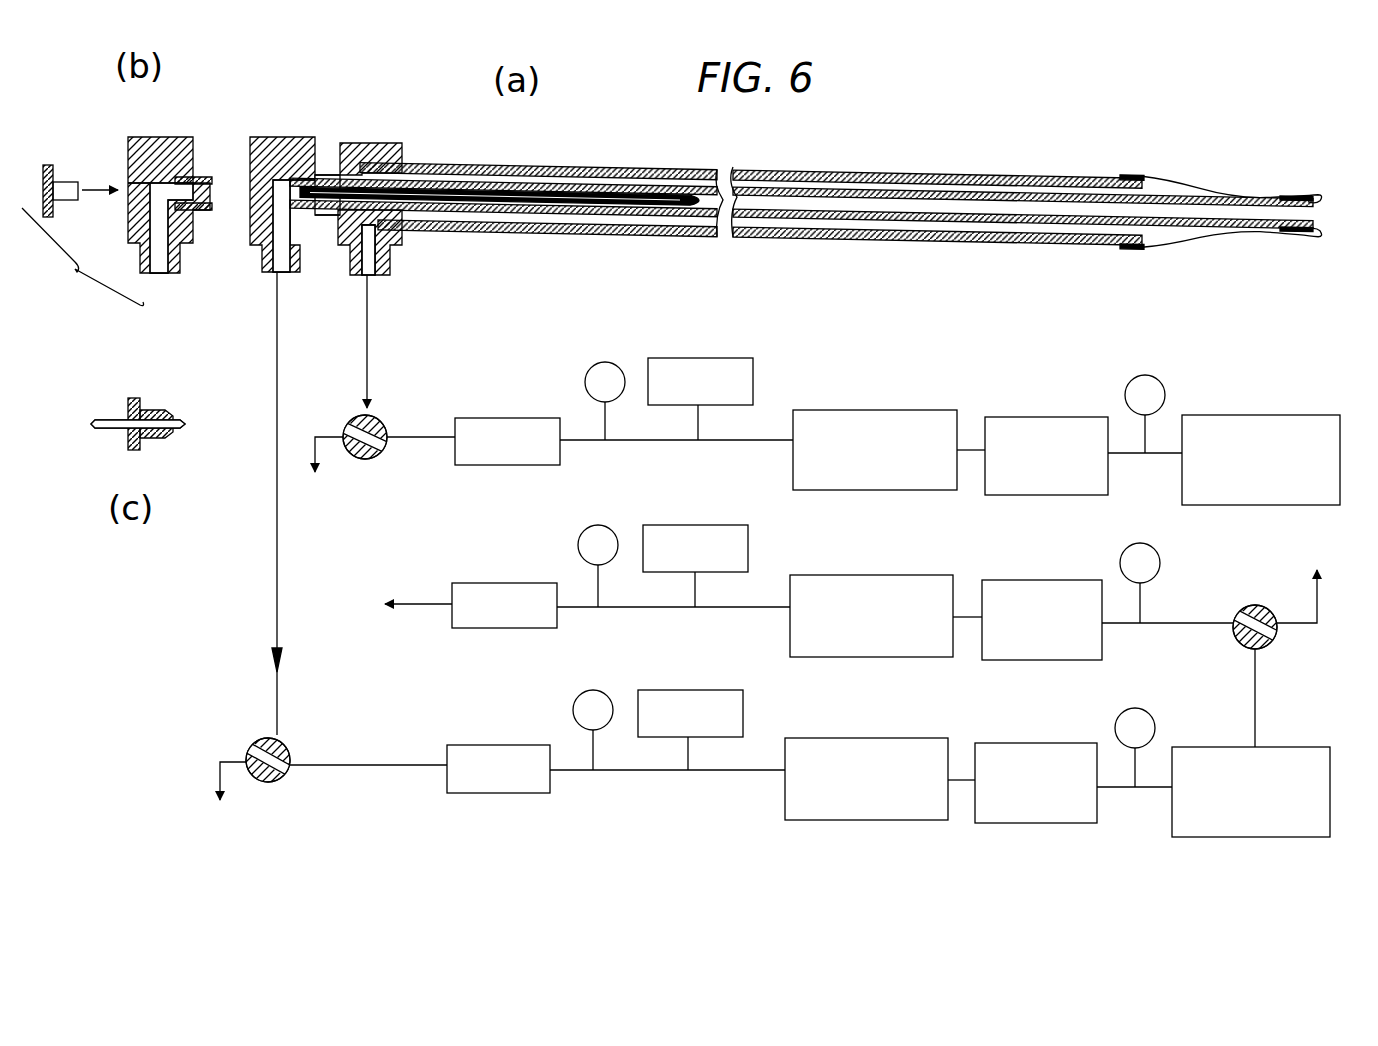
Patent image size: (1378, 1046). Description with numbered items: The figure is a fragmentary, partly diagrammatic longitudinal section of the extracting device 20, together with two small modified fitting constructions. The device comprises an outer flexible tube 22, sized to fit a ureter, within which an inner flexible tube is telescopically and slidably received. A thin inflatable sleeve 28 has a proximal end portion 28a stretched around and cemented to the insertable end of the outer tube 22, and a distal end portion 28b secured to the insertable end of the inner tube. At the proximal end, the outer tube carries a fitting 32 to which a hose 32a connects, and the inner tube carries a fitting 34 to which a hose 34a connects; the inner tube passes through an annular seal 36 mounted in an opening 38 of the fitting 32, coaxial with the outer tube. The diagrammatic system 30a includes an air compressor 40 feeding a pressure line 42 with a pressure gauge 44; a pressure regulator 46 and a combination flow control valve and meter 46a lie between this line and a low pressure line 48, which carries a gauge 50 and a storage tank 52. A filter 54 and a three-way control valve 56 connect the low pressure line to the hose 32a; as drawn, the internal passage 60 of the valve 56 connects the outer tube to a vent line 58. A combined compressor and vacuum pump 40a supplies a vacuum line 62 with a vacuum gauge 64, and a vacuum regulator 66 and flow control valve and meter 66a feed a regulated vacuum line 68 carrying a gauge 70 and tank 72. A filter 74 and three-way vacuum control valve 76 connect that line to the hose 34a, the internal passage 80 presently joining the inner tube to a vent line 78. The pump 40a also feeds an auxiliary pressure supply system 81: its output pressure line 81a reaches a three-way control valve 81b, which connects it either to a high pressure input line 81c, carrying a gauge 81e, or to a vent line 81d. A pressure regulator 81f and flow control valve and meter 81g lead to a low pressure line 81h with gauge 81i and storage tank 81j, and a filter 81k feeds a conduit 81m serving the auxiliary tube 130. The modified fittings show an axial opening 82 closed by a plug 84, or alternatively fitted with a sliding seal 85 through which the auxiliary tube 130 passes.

The extracting device 20 is at (806, 184).
The outer flexible tube 22 is at (918, 176).
The inflatable sleeve 28 is at (1165, 235).
The proximal end portion of sleeve 28a is at (1132, 172).
The distal end portion of sleeve 28b is at (1315, 132).
The system for selectively producing air pressure 30a is at (1238, 842).
The connector or fitting 32 is at (392, 268).
The flexible hose 32a is at (372, 325).
The connector or fitting 34 is at (262, 258).
The hose 34a is at (277, 592).
The annular seal 36 is at (333, 160).
The opening 38 is at (345, 168).
The air compressor 40 is at (1272, 415).
The combined compressor and vacuum pump 40a is at (1272, 747).
The pressure line 42 is at (1165, 455).
The pressure gauge 44 is at (1135, 378).
The pressure regulator 46 is at (1005, 417).
The combination flow control valve and meter 46a is at (828, 410).
The low pressure line 48 is at (398, 428).
The pressure gauge 50 is at (592, 365).
The storage tank 52 is at (715, 358).
The filter 54 is at (508, 418).
The control valve 56 is at (398, 452).
The vent line 58 is at (330, 432).
The internal passage 60 is at (360, 460).
The output vacuum line 62 is at (1152, 789).
The vacuum gauge 64 is at (1125, 710).
The vacuum regulator 66 is at (1055, 743).
The combination flow control valve and meter 66a is at (915, 738).
The regulated vacuum line 68 is at (352, 765).
The vacuum gauge 70 is at (590, 690).
The storage tank 72 is at (665, 690).
The filter 74 is at (468, 795).
The vacuum control valve 76 is at (300, 782).
The vent line 78 is at (215, 775).
The internal passage 80 is at (272, 785).
The auxiliary pressure supply system 81 is at (1290, 642).
The compressor output pressure line 81a is at (1257, 703).
The control valve 81b is at (1242, 608).
The high pressure input line 81c is at (1147, 625).
The vent line 81d is at (1317, 605).
The gauge 81e is at (1135, 545).
The pressure regulator 81f is at (1058, 580).
The combination flow control valve and meter 81g is at (895, 575).
The low pressure line 81h is at (690, 609).
The pressure gauge 81i is at (612, 526).
The storage tank 81j is at (718, 526).
The filter 81k is at (508, 583).
The hose or conduit 81m is at (440, 605).
The axial opening 82 is at (125, 205).
The plug 84 is at (68, 178).
The sliding seal or bushing 85 is at (140, 412).
The auxiliary tube 130 is at (100, 424).